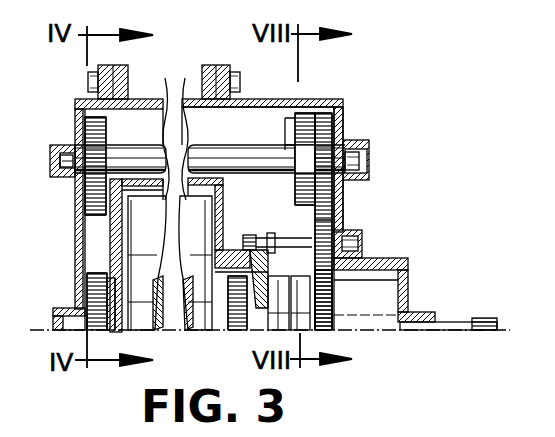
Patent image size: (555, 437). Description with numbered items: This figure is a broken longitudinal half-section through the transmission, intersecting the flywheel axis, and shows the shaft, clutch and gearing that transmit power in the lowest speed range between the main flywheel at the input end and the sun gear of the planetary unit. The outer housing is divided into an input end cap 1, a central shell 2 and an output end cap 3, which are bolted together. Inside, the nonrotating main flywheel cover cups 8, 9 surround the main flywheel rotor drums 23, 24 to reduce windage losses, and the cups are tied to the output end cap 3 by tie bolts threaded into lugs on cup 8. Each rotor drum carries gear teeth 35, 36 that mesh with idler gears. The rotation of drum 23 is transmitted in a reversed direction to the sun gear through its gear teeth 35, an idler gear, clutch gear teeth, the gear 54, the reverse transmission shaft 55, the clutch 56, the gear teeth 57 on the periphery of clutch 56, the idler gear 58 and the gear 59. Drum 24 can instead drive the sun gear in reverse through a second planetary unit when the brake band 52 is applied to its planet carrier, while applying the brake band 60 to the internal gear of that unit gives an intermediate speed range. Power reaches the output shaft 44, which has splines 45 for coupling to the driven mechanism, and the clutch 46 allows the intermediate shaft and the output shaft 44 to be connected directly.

The input end cap 1 is at (75, 118).
The central shell 2 is at (148, 100).
The output end cap 3 is at (345, 217).
The main flywheel cover cup 8 is at (112, 249).
The main flywheel cover cup 9 is at (223, 211).
The main flywheel rotor drum 23 is at (136, 186).
The main flywheel rotor drum 24 is at (222, 166).
The gear teeth on rotor drum 35 is at (83, 269).
The gear teeth on rotor drum 36 is at (230, 247).
The output shaft 44 is at (449, 320).
The splines 45 is at (483, 318).
The clutch 46 is at (408, 267).
The brake band 52 is at (282, 332).
The gear 54 is at (92, 217).
The reverse transmission shaft 55 is at (195, 152).
The clutch 56 is at (303, 99).
The gear teeth on clutch 57 is at (333, 100).
The idler gear 58 is at (310, 222).
The gear 59 is at (333, 311).
The brake band 60 is at (303, 277).